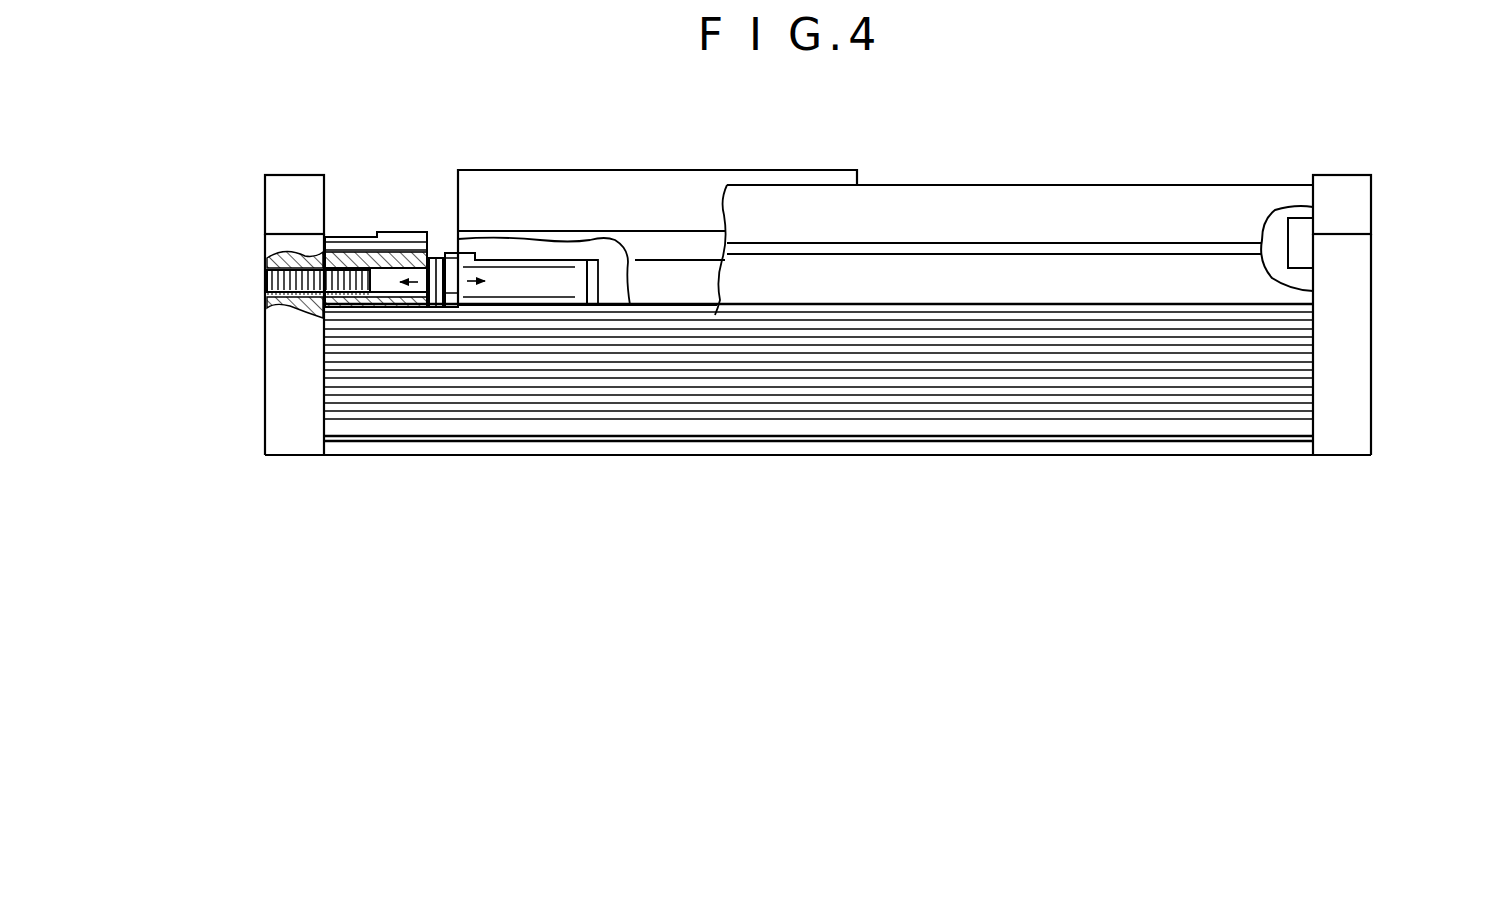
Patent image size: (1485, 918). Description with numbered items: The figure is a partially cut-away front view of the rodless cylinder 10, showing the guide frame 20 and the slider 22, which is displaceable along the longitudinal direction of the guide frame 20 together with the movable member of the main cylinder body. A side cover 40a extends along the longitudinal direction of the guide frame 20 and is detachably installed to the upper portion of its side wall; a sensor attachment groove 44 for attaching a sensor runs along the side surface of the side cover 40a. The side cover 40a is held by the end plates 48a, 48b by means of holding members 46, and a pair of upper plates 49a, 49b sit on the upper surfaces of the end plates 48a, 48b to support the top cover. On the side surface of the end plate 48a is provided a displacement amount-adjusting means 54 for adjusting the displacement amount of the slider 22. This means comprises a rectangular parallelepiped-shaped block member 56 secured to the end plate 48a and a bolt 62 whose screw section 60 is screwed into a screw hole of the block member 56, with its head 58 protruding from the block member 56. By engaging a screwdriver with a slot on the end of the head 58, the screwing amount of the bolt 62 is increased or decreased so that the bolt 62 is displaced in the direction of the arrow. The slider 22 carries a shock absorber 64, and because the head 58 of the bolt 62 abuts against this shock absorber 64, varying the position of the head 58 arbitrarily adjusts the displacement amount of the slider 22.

The rodless cylinder 10 is at (1392, 55).
The guide frame 20 is at (802, 462).
The slider 22 is at (673, 168).
The side cover 40a is at (942, 218).
The sensor attachment groove 44 is at (1138, 246).
The holding member 46 is at (1305, 243).
The end plate 48a is at (298, 397).
The end plate 48b is at (1355, 410).
The upper plate 49a is at (298, 190).
The upper plate 49b is at (1343, 192).
The displacement amount-adjusting means 54 is at (368, 234).
The block member 56 is at (407, 250).
The head 58 is at (430, 307).
The screw section 60 is at (340, 236).
The bolt 62 is at (347, 300).
The shock absorber 64 is at (518, 283).